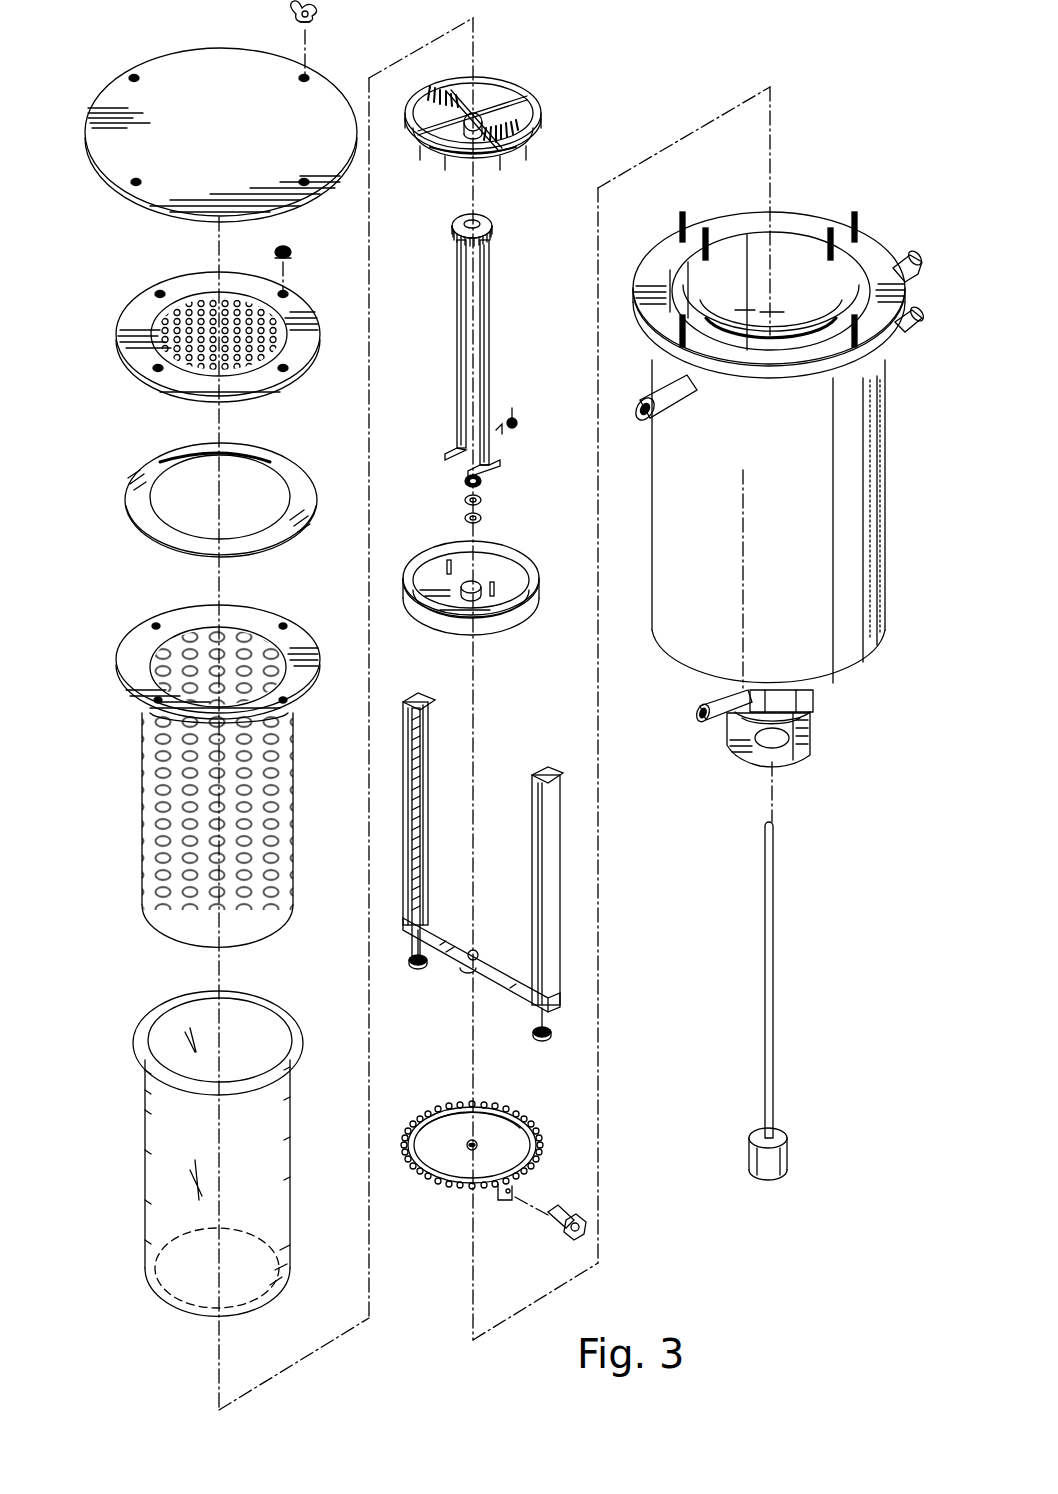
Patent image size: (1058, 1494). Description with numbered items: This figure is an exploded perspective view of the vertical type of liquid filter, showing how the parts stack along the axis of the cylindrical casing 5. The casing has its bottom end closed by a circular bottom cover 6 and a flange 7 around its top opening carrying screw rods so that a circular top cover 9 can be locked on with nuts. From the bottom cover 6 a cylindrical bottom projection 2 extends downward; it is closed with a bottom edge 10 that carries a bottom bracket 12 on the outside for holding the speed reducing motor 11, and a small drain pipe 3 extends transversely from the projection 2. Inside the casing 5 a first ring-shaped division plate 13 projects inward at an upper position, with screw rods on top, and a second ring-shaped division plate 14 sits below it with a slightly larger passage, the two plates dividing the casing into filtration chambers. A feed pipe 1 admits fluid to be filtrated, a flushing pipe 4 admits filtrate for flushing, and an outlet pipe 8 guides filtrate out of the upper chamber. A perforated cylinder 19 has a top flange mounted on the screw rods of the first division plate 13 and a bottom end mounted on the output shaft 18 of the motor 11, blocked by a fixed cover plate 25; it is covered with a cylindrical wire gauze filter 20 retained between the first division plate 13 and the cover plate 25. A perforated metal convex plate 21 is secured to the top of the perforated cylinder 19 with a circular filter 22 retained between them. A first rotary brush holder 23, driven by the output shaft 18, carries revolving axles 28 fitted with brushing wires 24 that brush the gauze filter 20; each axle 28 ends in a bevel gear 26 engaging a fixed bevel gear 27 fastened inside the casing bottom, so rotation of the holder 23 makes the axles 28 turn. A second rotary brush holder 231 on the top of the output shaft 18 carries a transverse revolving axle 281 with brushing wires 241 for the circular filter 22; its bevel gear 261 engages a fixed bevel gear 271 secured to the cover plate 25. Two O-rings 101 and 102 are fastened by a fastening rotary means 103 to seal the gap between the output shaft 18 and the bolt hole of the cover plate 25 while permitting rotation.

The feed pipe 1 is at (654, 398).
The cylindrical bottom projection 2 is at (806, 716).
The small drain pipe 3 is at (724, 722).
The flushing pipe 4 is at (914, 314).
The cylindrical casing 5 is at (878, 464).
The circular bottom cover 6 is at (872, 658).
The flange 7 is at (774, 276).
The outlet pipe 8 is at (912, 252).
The circular top cover 9 is at (118, 100).
The bottom edge 10 is at (814, 700).
The speed reducing motor 11 is at (789, 1150).
The bottom bracket 12 is at (812, 748).
The first ring-shaped division plate 13 is at (802, 262).
The second ring-shaped division plate 14 is at (848, 280).
The output shaft 18 is at (775, 936).
The perforated cylinder 19 is at (144, 636).
The cylindrical wire gauze filter 20 is at (158, 1116).
The perforated metal convex plate 21 is at (140, 314).
The circular filter 22 is at (156, 472).
The first rotary brush holder 23 is at (468, 846).
The brushing wires 24 is at (411, 774).
The fixed cover plate 25 is at (522, 614).
The bevel gear 26 is at (424, 966).
The fixed bevel gear 27 is at (511, 1132).
The revolving axles 28 is at (411, 820).
The O-ring 101 is at (481, 503).
The O-ring 102 is at (481, 521).
The fastening rotary means 103 is at (481, 482).
The second rotary brush holder 231 is at (520, 148).
The brushing wires 241 is at (500, 124).
The bevel gear 261 is at (501, 110).
The fixed bevel gear 271 is at (492, 224).
The revolving axle 281 is at (520, 118).